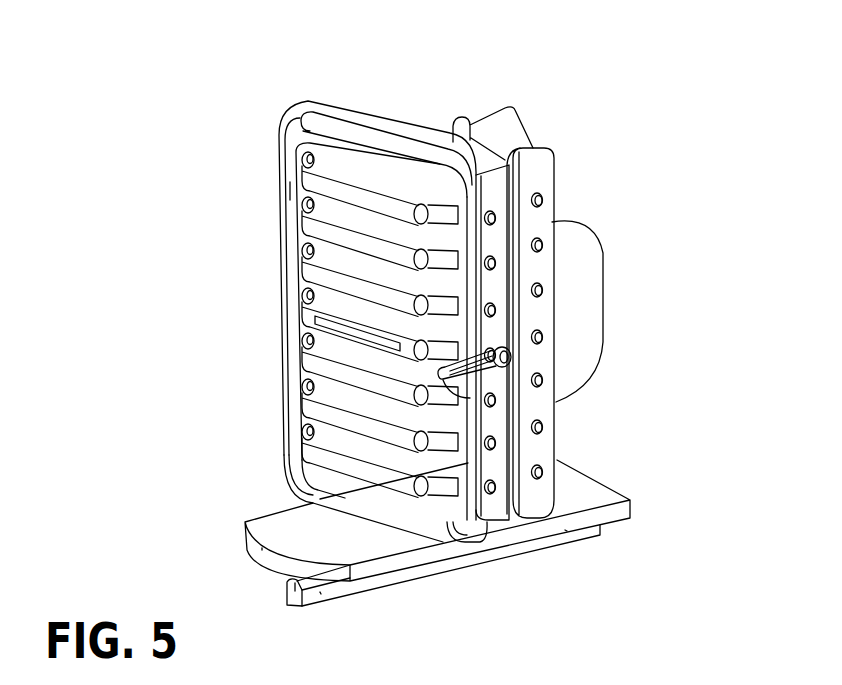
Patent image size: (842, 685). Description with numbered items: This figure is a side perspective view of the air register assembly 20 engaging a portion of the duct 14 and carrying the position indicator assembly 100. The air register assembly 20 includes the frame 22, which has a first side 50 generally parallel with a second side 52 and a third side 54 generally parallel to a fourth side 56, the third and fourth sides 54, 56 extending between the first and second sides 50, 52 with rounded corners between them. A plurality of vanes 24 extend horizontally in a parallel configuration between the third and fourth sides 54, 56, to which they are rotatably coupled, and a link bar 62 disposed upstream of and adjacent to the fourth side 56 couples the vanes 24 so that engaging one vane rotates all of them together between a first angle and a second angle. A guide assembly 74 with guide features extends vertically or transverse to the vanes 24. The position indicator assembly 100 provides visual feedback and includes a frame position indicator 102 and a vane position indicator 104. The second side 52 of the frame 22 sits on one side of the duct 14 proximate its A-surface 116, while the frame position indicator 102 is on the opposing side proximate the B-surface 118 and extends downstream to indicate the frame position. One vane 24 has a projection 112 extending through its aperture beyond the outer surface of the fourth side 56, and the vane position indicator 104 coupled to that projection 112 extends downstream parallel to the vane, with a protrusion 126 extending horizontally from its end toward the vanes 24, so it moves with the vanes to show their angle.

The duct 14 is at (262, 548).
The air register assembly 20 is at (645, 238).
The frame 22 is at (287, 112).
The vane 24 is at (303, 264).
The first side 50 is at (396, 120).
The second side 52 is at (432, 540).
The third side 54 is at (288, 181).
The fourth side 56 is at (483, 473).
The link bar 62 is at (535, 174).
The guide assembly 74 is at (509, 104).
The position indicator assembly 100 is at (376, 589).
The frame position indicator 102 is at (320, 592).
The vane position indicator 104 is at (507, 343).
The projection 112 is at (512, 357).
The A-surface 116 is at (275, 522).
The B-surface 118 is at (567, 530).
The protrusion 126 is at (470, 398).